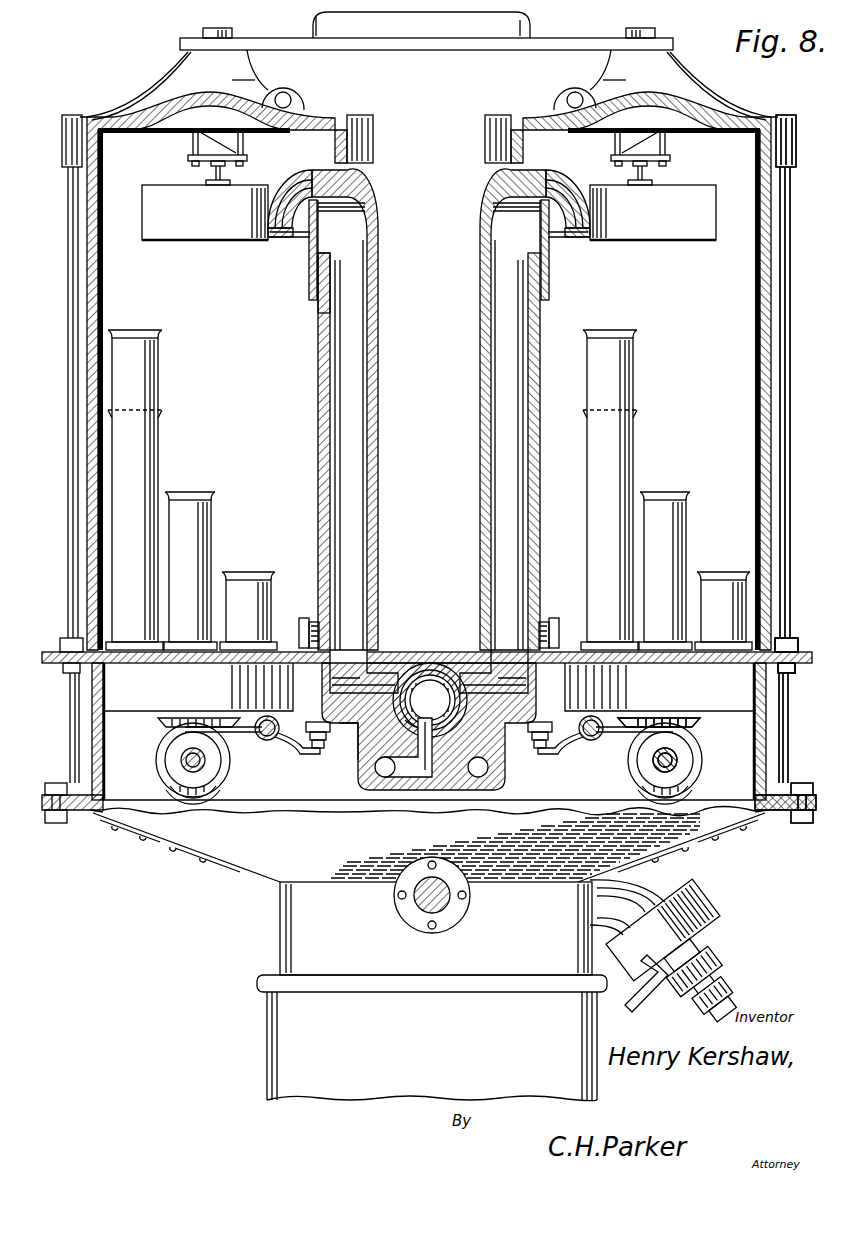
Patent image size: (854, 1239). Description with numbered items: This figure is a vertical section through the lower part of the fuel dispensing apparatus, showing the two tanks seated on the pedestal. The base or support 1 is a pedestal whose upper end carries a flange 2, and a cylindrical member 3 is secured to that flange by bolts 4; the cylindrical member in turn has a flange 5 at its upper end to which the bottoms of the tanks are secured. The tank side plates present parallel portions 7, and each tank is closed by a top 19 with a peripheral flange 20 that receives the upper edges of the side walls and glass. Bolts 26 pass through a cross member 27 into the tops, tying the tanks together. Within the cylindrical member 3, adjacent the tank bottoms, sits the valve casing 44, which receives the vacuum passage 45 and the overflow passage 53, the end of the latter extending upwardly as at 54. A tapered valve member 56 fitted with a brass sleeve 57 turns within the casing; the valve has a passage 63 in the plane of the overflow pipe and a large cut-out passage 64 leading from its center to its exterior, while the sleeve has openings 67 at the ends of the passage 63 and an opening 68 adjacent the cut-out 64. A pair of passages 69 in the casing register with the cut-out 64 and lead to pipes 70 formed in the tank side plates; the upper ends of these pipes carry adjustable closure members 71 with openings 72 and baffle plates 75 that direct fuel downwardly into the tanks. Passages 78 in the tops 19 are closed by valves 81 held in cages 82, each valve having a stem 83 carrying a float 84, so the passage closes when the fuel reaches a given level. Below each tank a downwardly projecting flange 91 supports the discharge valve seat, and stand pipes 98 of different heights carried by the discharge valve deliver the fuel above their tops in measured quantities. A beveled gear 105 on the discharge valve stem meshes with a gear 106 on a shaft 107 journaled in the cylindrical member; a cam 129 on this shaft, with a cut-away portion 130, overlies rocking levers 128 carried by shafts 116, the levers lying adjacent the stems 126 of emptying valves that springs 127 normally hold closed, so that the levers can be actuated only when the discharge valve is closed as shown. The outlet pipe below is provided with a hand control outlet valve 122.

The base or support 1 is at (282, 1046).
The flange 2 is at (786, 812).
The cylindrical member 3 is at (790, 730).
The bolts 4 is at (804, 784).
The flange 5 is at (800, 662).
The parallel portions 7 is at (64, 220).
The top 19 is at (152, 88).
The peripheral flange 20 is at (380, 152).
The bolts 26 is at (204, 32).
The cross member 27 is at (312, 42).
The valve casing 44 is at (418, 663).
The passage 45 is at (490, 775).
The passage 53 is at (362, 783).
The upwardly extending end of passage 54 is at (405, 795).
The tapered valve member 56 is at (408, 676).
The sleeve 57 is at (440, 668).
The passage 63 is at (360, 750).
The passage 64 is at (456, 694).
The openings 67 is at (394, 698).
The opening 68 is at (450, 670).
The passages 69 is at (352, 672).
The pipes 70 is at (368, 362).
The closure members 71 is at (312, 282).
The openings 72 is at (308, 238).
The baffle plate 75 is at (270, 237).
The passages 78 is at (284, 98).
The valve 81 is at (198, 147).
The cage 82 is at (247, 158).
The valve stem 83 is at (210, 168).
The float 84 is at (158, 192).
The downwardly projecting flange 91 is at (361, 736).
The stand pipes 98 is at (182, 498).
The beveled gear 105 is at (690, 716).
The gear 106 is at (178, 718).
The shaft 107 is at (676, 764).
The shaft 116 is at (282, 722).
The hand control outlet valve 122 is at (718, 918).
The valve stems 126 is at (316, 756).
The springs 127 is at (302, 628).
The rocking levers 128 is at (244, 736).
The cam 129 is at (180, 764).
The cut-away portion 130 is at (170, 740).